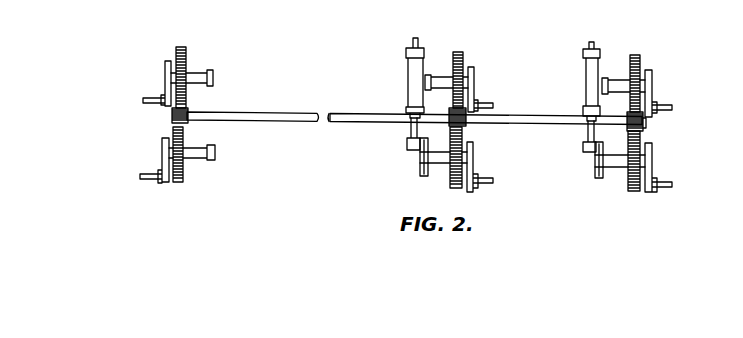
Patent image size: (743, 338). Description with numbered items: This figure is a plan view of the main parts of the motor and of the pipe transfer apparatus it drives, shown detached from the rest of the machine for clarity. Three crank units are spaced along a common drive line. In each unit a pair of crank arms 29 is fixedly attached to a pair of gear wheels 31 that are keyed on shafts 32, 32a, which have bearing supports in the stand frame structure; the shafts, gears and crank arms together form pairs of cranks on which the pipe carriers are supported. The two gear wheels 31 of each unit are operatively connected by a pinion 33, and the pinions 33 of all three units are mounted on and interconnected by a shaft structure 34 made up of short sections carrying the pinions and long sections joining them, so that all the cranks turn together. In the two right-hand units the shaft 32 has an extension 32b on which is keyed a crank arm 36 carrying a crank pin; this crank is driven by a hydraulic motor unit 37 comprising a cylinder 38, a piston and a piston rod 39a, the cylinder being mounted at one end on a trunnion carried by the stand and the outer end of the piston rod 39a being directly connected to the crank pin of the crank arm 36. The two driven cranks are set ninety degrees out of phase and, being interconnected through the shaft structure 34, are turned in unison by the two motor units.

The crank arm 29 is at (165, 90).
The gear wheel 31 is at (183, 47).
The shaft 32 is at (197, 160).
The shaft 32a is at (200, 72).
The shaft extension 32b is at (600, 160).
The pinion 33 is at (186, 111).
The shaft structure 34 is at (343, 111).
The crank arm 36 is at (418, 168).
The hydraulic motor unit 37 is at (404, 56).
The cylinder 38 is at (408, 73).
The piston rod 39a is at (588, 130).